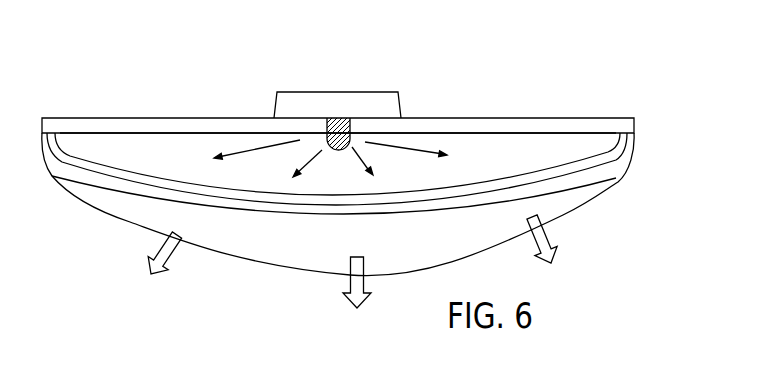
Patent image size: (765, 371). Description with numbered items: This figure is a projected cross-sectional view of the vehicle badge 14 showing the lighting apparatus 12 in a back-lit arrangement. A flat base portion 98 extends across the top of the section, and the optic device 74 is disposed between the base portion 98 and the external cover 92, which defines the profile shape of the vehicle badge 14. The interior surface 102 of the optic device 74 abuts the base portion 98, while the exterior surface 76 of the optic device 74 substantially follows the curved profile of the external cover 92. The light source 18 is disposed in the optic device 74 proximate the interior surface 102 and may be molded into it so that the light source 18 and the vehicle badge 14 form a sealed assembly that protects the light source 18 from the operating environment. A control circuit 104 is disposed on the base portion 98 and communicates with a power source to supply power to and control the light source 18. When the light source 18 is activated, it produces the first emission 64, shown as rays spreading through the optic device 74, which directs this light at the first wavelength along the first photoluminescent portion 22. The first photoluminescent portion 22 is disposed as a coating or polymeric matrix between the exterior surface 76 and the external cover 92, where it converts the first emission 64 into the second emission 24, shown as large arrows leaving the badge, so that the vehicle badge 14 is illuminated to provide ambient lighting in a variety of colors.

The lighting apparatus 12 is at (190, 77).
The vehicle badge 14 is at (585, 38).
The light source 18 is at (340, 124).
The first photoluminescent portion 22 is at (165, 176).
The second emission 24 is at (350, 282).
The first emission 64 is at (322, 150).
The optic device 74 is at (594, 145).
The exterior surface 76 is at (430, 185).
The external cover 92 is at (550, 208).
The base portion 98 is at (598, 118).
The interior surface 102 is at (477, 133).
The control circuit 104 is at (288, 100).